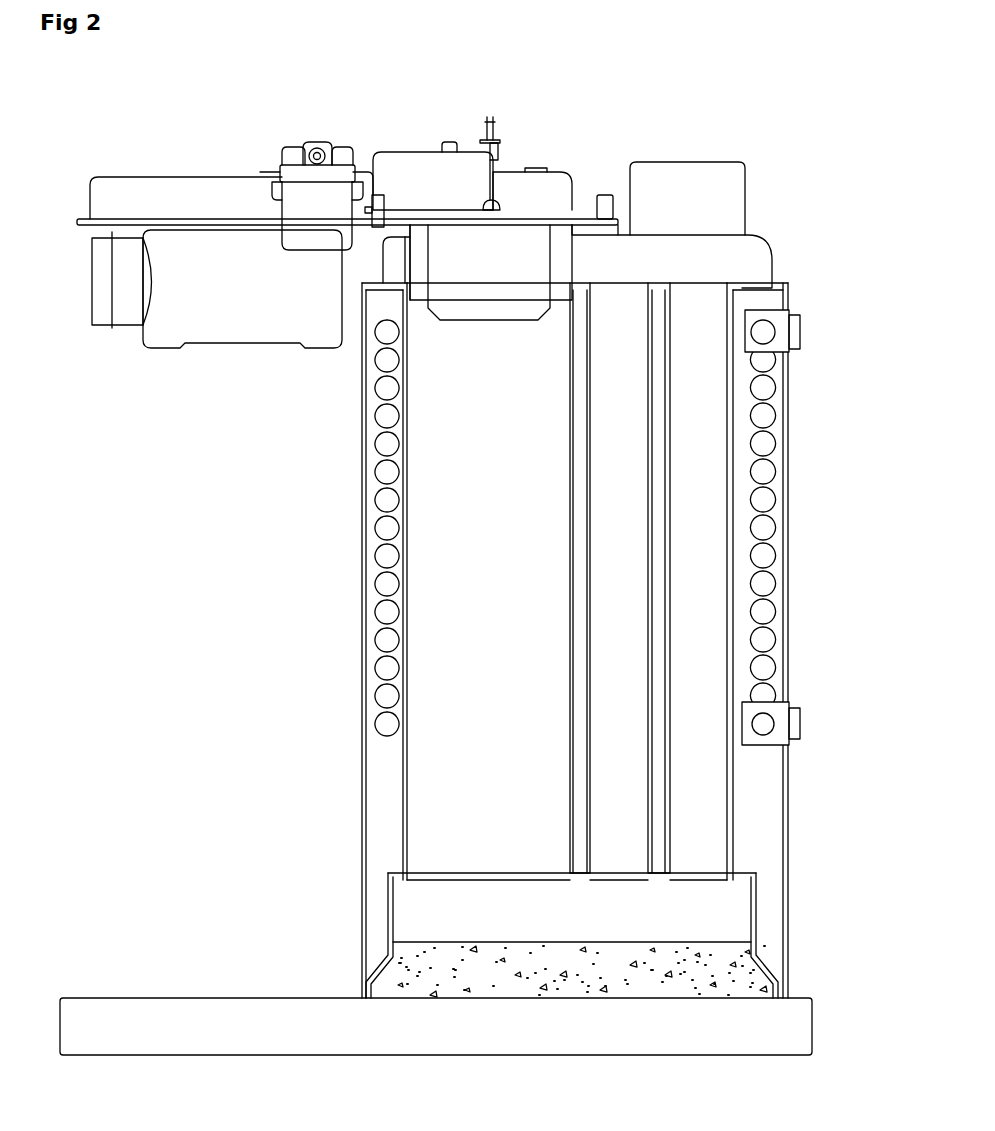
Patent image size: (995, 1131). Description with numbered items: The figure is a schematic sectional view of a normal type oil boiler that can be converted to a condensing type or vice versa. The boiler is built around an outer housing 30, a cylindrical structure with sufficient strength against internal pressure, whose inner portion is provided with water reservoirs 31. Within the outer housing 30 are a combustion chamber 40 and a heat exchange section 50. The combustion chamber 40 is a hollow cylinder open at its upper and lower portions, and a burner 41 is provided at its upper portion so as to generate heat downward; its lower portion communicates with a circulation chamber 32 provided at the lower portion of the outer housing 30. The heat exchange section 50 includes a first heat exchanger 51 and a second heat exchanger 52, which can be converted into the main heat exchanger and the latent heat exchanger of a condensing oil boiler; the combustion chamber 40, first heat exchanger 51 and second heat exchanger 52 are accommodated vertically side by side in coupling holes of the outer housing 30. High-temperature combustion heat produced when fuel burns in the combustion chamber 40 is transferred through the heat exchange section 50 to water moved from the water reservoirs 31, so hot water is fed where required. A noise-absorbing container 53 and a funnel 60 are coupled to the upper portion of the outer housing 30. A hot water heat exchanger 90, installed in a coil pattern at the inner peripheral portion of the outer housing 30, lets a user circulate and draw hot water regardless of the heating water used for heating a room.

The outer housing 30 is at (350, 578).
The water reservoirs 31 is at (470, 501).
The circulation chamber 32 is at (427, 927).
The combustion chamber 40 is at (417, 392).
The burner 41 is at (462, 273).
The heat exchange section 50 is at (479, 478).
The first heat exchanger 51 is at (655, 293).
The second heat exchanger 52 is at (732, 313).
The noise-absorbing container 53 is at (768, 242).
The funnel 60 is at (737, 183).
The hot water heat exchanger 90 is at (770, 332).